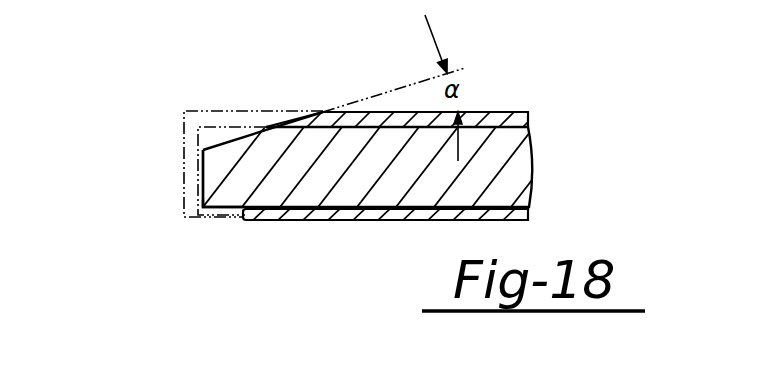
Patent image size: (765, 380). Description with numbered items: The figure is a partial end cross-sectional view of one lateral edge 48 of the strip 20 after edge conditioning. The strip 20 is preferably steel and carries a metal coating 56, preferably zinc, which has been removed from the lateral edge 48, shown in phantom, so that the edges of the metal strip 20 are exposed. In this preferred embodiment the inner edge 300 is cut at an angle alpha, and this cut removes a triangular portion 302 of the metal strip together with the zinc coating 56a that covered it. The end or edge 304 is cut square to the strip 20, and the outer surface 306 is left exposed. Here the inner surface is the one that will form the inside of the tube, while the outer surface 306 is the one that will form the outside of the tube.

The strip 20 is at (487, 164).
The lateral edge 48 is at (162, 138).
The metal coating 56 is at (393, 209).
The zinc coating 56a is at (187, 196).
The inner edge 300 is at (245, 137).
The triangular portion 302 is at (212, 137).
The end or edge 304 is at (201, 172).
The outer surface 306 is at (218, 213).